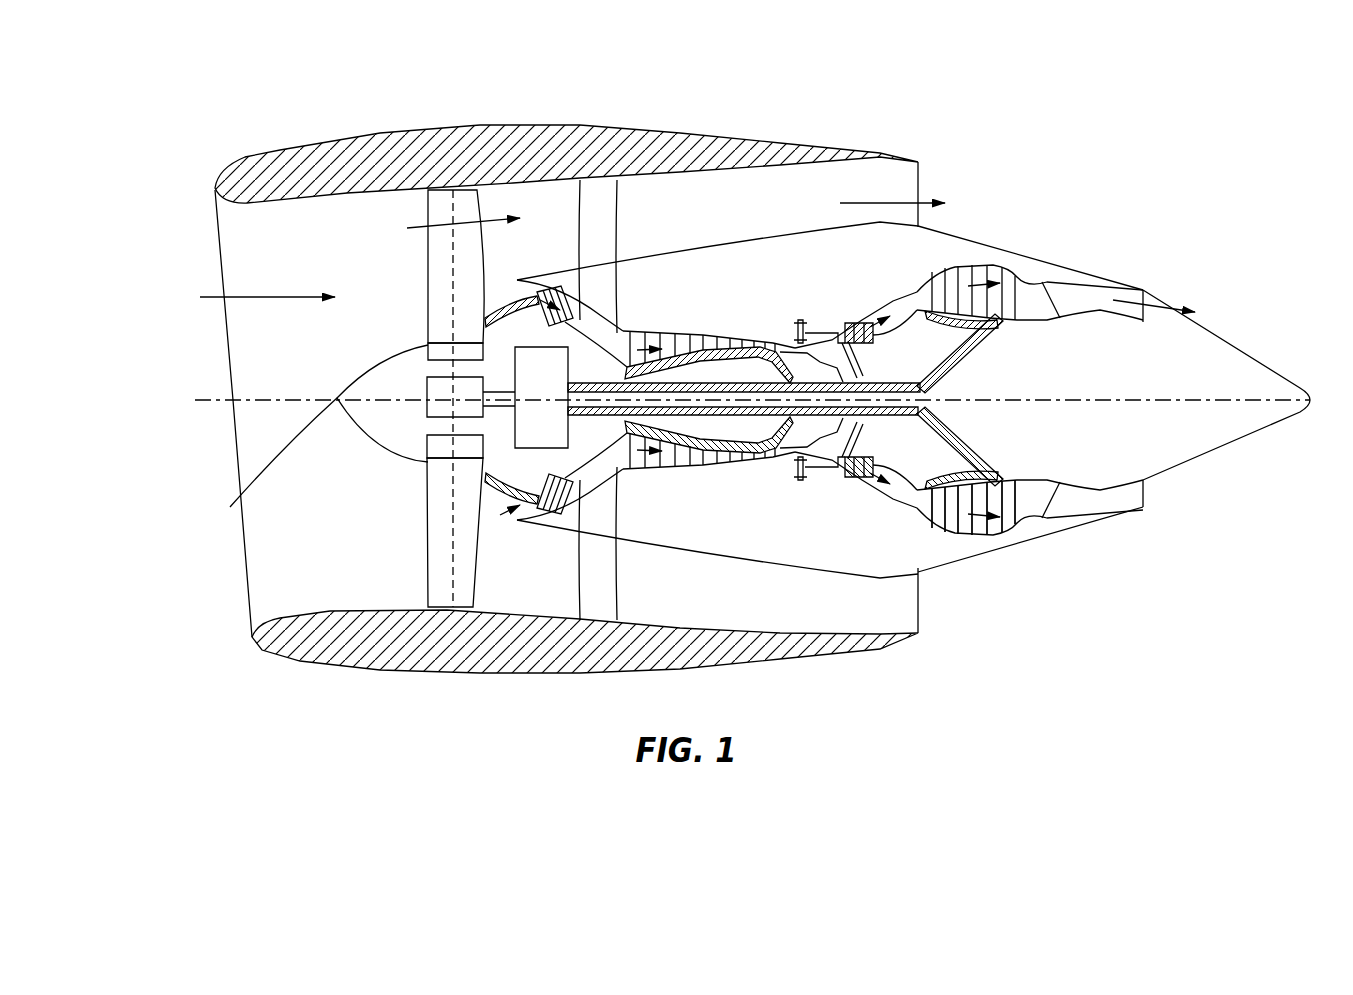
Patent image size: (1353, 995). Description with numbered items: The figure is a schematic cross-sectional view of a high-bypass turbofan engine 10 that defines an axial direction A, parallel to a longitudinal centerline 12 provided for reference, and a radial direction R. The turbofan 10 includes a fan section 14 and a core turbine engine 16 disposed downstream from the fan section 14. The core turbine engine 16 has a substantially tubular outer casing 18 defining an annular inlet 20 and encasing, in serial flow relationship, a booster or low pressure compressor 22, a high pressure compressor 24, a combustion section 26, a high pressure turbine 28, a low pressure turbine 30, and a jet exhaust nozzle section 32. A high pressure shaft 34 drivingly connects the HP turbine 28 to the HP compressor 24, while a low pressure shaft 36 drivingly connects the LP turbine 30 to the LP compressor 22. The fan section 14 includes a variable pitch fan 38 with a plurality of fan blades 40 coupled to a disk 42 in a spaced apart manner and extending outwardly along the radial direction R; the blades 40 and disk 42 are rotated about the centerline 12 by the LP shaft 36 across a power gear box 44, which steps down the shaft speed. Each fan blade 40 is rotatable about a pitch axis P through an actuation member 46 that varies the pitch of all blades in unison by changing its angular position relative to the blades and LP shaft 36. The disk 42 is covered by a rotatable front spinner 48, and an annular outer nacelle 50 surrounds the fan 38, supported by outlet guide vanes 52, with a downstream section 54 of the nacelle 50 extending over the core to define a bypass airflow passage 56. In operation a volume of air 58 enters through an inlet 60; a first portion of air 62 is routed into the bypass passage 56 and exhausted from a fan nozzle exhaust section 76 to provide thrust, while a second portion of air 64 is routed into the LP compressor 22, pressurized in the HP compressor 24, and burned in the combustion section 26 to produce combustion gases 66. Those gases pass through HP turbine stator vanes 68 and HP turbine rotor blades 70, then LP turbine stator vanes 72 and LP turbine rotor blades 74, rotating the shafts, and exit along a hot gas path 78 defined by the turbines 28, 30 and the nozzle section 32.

The turbofan engine 10 is at (1063, 142).
The longitudinal centerline 12 is at (1087, 397).
The fan section 14 is at (470, 92).
The core turbine engine 16 is at (783, 287).
The outer casing 18 is at (773, 562).
The annular inlet 20 is at (520, 506).
The low pressure compressor 22 is at (572, 478).
The high pressure compressor 24 is at (647, 452).
The combustion section 26 is at (820, 458).
The high pressure turbine 28 is at (890, 470).
The low pressure turbine 30 is at (1000, 522).
The jet exhaust nozzle section 32 is at (1063, 508).
The high pressure shaft 34 is at (858, 356).
The low pressure shaft 36 is at (943, 358).
The variable pitch fan 38 is at (392, 453).
The fan blades 40 is at (427, 548).
The disk 42 is at (447, 353).
The power gear box 44 is at (540, 387).
The actuation member 46 is at (427, 382).
The front spinner 48 is at (267, 465).
The outer nacelle 50 is at (472, 672).
The outlet guide vanes 52 is at (618, 207).
The downstream section of the nacelle 54 is at (843, 148).
The bypass airflow passage 56 is at (714, 226).
The volume of air 58 is at (267, 297).
The inlet 60 is at (245, 613).
The first portion of air 62 is at (443, 222).
The second portion of air 64 is at (510, 290).
The combustion gases 66 is at (960, 267).
The HP turbine stator vanes 68 is at (836, 473).
The HP turbine rotor blades 70 is at (857, 452).
The LP turbine stator vanes 72 is at (917, 527).
The LP turbine rotor blades 74 is at (933, 530).
The fan nozzle exhaust section 76 is at (905, 187).
The hot gas path 78 is at (908, 293).
The pitch axis P is at (455, 205).
The radial direction R is at (88, 272).
The axial direction A is at (522, 840).